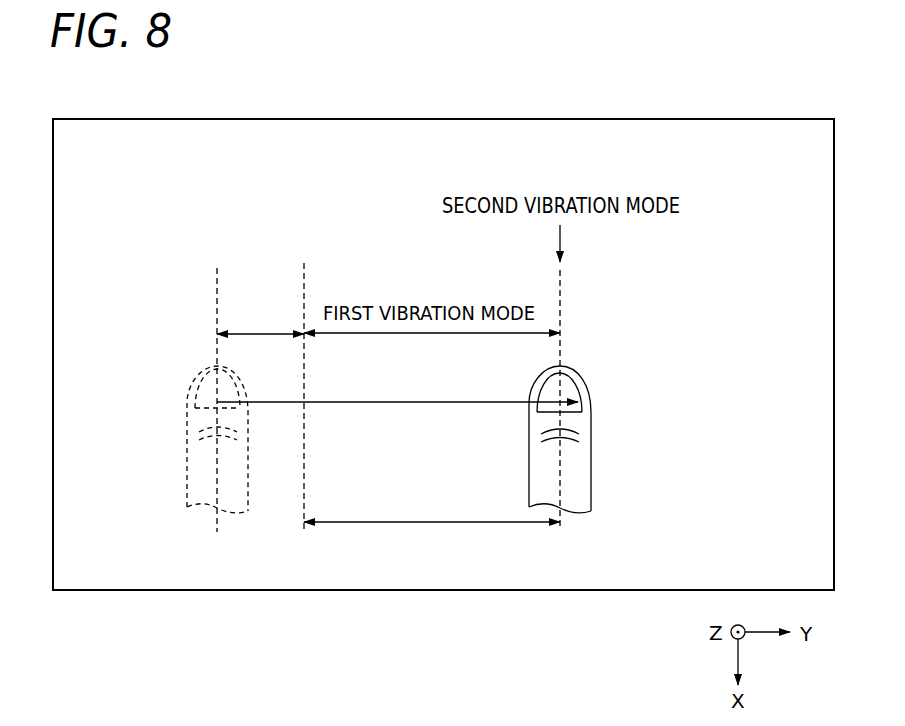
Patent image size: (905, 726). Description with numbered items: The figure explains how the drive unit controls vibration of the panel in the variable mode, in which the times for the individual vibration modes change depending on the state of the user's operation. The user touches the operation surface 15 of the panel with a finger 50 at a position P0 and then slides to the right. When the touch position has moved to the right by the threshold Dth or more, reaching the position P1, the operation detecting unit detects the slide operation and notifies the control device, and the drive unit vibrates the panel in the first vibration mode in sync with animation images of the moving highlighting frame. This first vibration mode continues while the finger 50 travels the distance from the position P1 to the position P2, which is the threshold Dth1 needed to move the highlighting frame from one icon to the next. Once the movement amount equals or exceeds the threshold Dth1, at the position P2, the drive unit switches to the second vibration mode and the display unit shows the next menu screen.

The operation surface 15 is at (565, 128).
The finger 50 is at (583, 385).
The position P0 is at (217, 414).
The position P1 is at (303, 411).
The position P2 is at (559, 415).
The threshold Dth is at (260, 319).
The threshold Dth1 is at (432, 536).